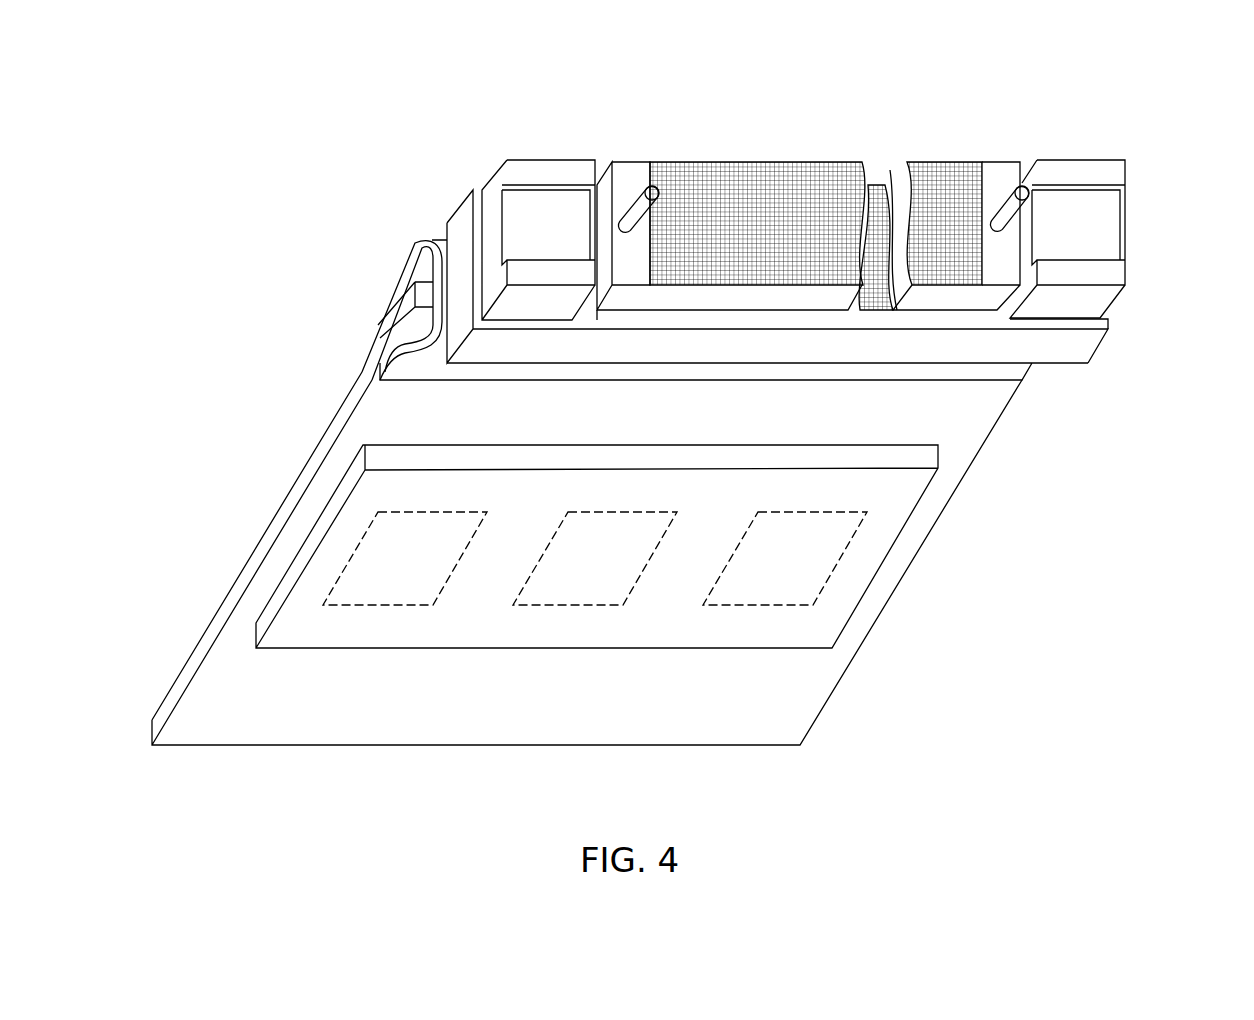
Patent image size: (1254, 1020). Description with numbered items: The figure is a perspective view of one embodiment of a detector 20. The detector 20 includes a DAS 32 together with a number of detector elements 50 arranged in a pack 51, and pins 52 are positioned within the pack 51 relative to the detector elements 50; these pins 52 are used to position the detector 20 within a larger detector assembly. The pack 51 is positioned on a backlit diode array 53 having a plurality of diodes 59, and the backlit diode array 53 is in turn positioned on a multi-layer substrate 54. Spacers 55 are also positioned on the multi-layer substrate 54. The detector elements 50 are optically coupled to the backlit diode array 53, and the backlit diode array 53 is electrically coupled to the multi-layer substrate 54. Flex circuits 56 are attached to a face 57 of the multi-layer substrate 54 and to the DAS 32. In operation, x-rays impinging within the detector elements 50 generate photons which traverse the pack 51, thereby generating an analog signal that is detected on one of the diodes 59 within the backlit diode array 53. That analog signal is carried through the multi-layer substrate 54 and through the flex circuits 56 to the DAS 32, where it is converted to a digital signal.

The detector 20 is at (787, 246).
The DAS 32 is at (888, 570).
The detector elements 50 is at (808, 171).
The pack 51 is at (647, 125).
The pins 52 is at (647, 197).
The backlit diode array 53 is at (980, 317).
The multi-layer substrate 54 is at (1087, 347).
The spacers 55 is at (540, 158).
The flex circuits 56 is at (428, 352).
The face 57 is at (447, 228).
The diodes 59 is at (882, 183).